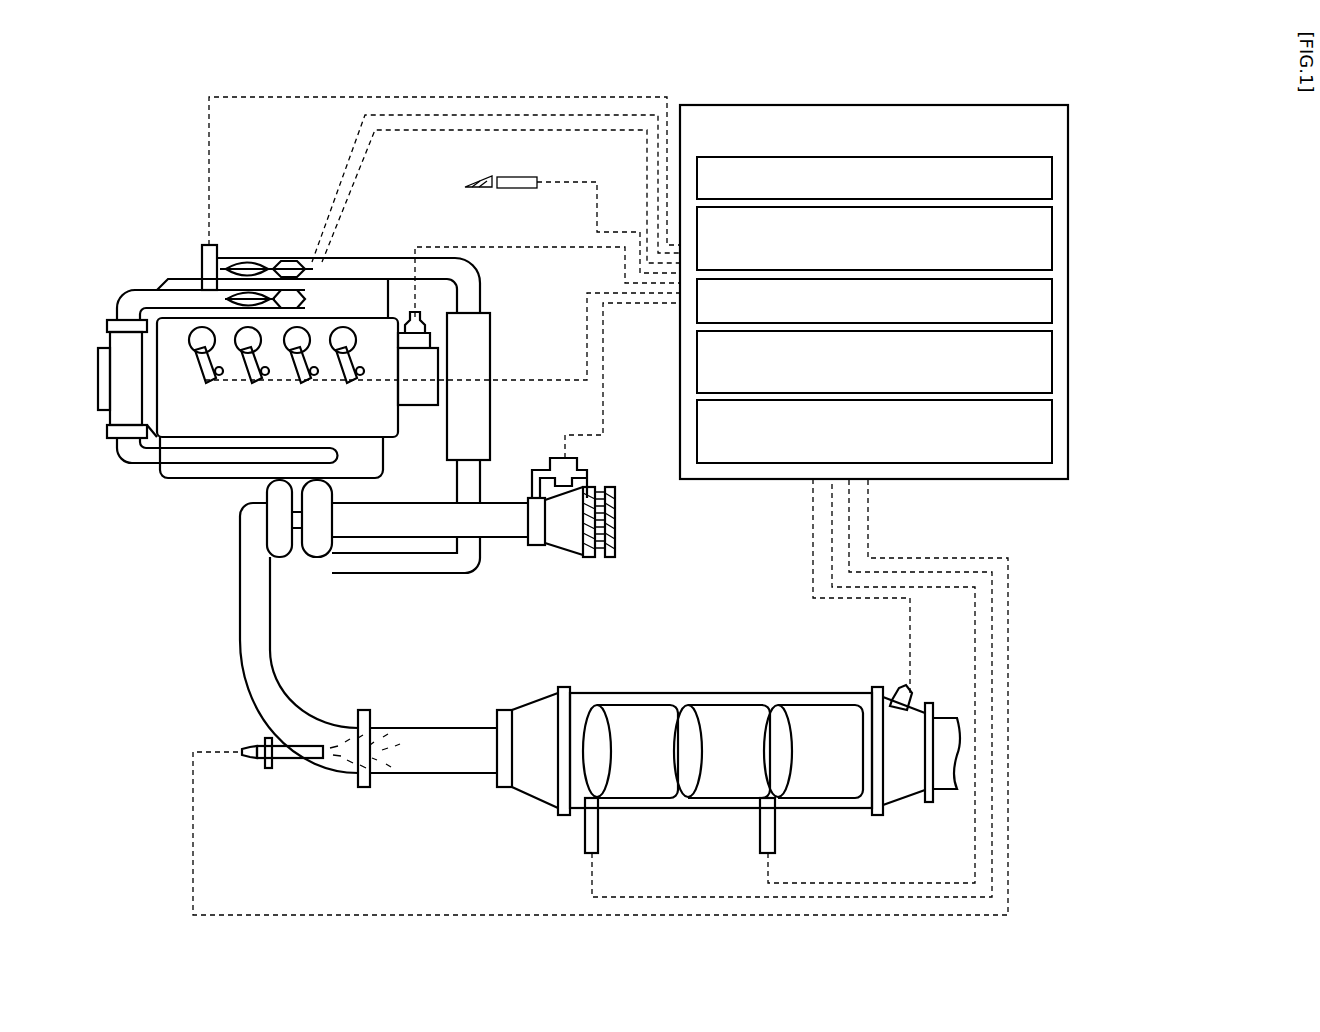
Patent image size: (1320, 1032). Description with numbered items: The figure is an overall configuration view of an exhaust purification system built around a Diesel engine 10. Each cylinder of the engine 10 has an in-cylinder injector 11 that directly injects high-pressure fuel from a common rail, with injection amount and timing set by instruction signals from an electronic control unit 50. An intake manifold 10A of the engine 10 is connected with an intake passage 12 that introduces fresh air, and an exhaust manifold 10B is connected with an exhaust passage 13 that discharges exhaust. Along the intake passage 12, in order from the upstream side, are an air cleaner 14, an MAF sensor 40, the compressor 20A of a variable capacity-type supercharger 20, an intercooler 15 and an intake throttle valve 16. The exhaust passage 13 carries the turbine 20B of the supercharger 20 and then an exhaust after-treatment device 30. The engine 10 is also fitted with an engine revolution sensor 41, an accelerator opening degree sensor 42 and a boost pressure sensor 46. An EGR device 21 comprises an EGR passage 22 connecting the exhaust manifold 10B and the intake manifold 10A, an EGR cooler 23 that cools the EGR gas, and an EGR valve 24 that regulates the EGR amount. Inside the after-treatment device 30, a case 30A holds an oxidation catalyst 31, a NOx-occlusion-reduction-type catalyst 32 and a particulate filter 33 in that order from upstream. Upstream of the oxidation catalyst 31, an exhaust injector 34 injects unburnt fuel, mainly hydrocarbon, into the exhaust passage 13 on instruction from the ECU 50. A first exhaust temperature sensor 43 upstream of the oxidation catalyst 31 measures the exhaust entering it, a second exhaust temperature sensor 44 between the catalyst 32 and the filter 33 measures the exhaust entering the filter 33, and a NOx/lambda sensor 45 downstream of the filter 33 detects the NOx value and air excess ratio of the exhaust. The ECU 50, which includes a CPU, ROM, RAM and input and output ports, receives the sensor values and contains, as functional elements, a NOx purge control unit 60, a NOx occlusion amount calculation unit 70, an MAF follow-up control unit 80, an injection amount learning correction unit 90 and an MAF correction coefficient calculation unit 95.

The Diesel engine 10 is at (372, 318).
The intake manifold 10A is at (178, 280).
The exhaust manifold 10B is at (187, 479).
The in-cylinder injector 11 is at (373, 390).
The intake passage 12 is at (437, 575).
The exhaust passage 13 is at (238, 612).
The air cleaner 14 is at (598, 487).
The intercooler 15 is at (490, 352).
The intake throttle valve 16 is at (263, 261).
The variable capacity-type supercharger 20 is at (275, 613).
The compressor 20A is at (318, 558).
The turbine 20B is at (282, 558).
The EGR device 21 is at (117, 283).
The EGR passage 22 is at (140, 465).
The EGR cooler 23 is at (108, 376).
The EGR valve 24 is at (250, 290).
The exhaust after-treatment device 30 is at (732, 673).
The case 30A is at (607, 692).
The oxidation catalyst 31 is at (630, 763).
The NOx-occlusion-reduction-type catalyst 32 is at (720, 763).
The particulate filter 33 is at (810, 763).
The exhaust injector 34 is at (300, 760).
The MAF sensor 40 is at (563, 456).
The engine revolution sensor 41 is at (420, 322).
The accelerator opening degree sensor 42 is at (512, 177).
The first exhaust temperature sensor 43 is at (598, 831).
The second exhaust temperature sensor 44 is at (775, 831).
The NOx/lambda sensor 45 is at (893, 686).
The boost pressure sensor 46 is at (203, 245).
The electronic control unit 50 is at (912, 105).
The NOx purge control unit 60 is at (1052, 178).
The NOx occlusion amount calculation unit 70 is at (1052, 238).
The MAF follow-up control unit 80 is at (1052, 300).
The injection amount learning correction unit 90 is at (1052, 360).
The MAF correction coefficient calculation unit 95 is at (1052, 428).